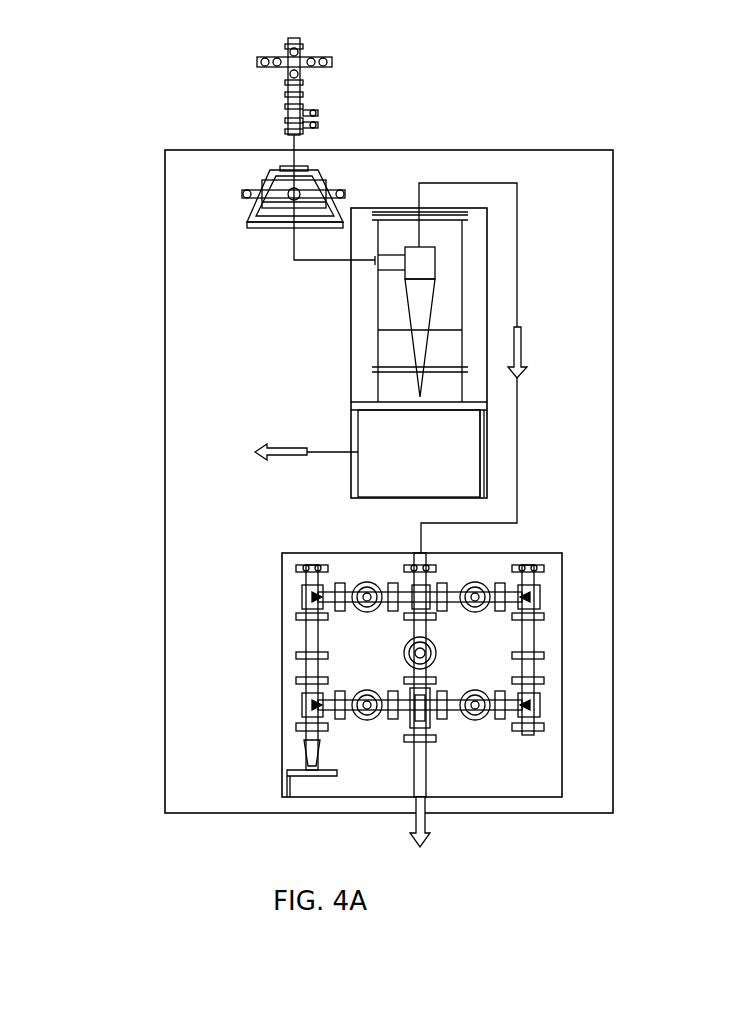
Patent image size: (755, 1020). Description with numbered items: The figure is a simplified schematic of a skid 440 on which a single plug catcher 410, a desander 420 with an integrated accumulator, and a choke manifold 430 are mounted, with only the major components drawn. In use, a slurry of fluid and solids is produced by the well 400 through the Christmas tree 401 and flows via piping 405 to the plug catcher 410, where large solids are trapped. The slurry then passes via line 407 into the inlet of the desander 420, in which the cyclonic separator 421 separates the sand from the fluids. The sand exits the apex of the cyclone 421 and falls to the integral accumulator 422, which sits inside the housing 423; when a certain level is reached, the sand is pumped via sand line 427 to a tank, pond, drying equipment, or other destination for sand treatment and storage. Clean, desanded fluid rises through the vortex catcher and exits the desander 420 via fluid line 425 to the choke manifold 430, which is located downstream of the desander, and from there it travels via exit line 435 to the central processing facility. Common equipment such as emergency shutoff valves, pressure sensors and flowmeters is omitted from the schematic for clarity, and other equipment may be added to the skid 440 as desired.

The well 400 is at (207, 62).
The Christmas tree 401 is at (316, 41).
The piping 405 is at (290, 145).
The line 407 is at (336, 258).
The plug catcher 410 is at (282, 230).
The desander 420 is at (351, 458).
The cyclonic separator 421 is at (435, 273).
The accumulator 422 is at (435, 455).
The housing 423 is at (487, 472).
The fluid line 425 is at (465, 182).
The sand line 427 is at (342, 448).
The choke manifold 430 is at (550, 760).
The exit line 435 is at (427, 826).
The skid 440 is at (585, 165).